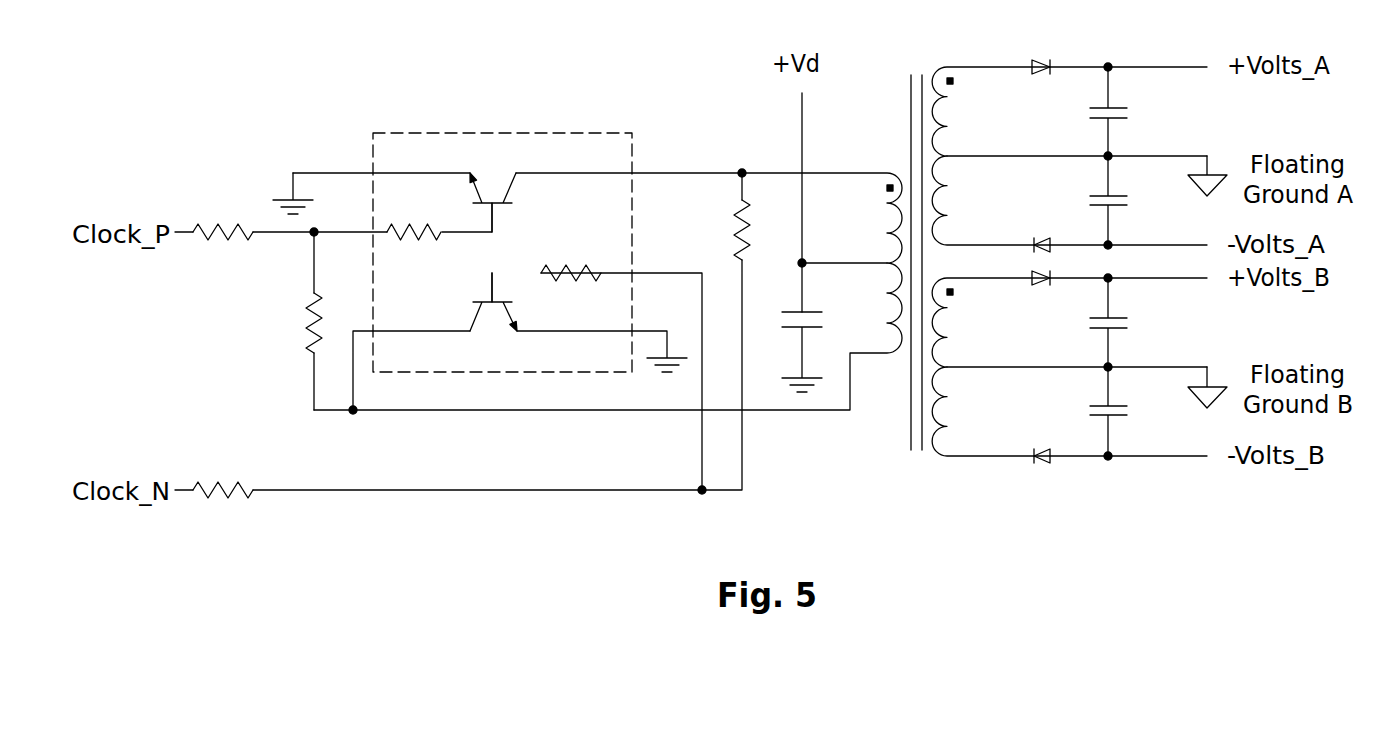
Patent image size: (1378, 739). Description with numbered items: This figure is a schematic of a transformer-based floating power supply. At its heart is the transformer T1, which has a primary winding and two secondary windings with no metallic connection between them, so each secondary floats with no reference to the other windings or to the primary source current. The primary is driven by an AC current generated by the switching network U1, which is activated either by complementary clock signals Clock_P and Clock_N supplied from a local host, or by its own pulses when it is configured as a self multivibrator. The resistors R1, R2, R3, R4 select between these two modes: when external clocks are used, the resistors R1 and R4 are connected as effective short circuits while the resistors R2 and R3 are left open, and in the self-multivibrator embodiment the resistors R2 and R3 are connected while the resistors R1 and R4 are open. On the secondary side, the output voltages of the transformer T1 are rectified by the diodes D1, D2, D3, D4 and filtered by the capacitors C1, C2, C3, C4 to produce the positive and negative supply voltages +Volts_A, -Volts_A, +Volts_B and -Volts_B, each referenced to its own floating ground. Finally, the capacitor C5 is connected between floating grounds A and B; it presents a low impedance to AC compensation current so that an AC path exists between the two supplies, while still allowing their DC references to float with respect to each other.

The resistor R1 is at (223, 198).
The resistor R2 is at (289, 324).
The resistor R3 is at (717, 229).
The resistor R4 is at (223, 456).
The switching network U1 is at (454, 130).
The transformer T1 is at (760, 238).
The capacitor C1 is at (1165, 111).
The capacitor C2 is at (1165, 322).
The capacitor C3 is at (1056, 411).
The capacitor C4 is at (1056, 200).
The capacitor C5 is at (830, 339).
The diode D1 is at (1044, 55).
The diode D2 is at (1030, 296).
The diode D3 is at (1024, 235).
The diode D4 is at (1024, 446).